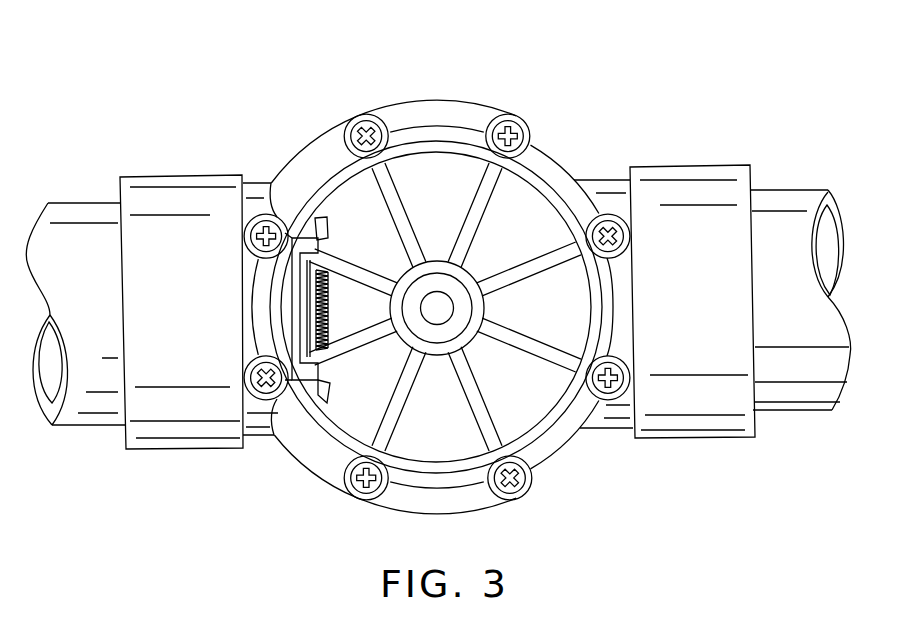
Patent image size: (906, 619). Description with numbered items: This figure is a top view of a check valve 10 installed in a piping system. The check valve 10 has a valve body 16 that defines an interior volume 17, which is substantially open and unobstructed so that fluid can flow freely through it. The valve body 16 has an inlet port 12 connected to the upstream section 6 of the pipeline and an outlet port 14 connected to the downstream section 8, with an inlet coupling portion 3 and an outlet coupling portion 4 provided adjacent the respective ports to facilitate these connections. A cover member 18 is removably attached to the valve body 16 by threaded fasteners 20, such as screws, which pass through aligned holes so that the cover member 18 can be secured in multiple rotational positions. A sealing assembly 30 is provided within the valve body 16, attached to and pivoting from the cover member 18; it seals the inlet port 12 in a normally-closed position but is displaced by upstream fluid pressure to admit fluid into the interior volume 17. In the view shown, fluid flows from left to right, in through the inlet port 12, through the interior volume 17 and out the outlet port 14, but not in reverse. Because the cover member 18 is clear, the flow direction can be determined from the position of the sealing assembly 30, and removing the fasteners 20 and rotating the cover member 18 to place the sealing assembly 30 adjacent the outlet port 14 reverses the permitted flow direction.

The check valve 10 is at (199, 97).
The inlet coupling portion 3 is at (181, 178).
The outlet coupling portion 4 is at (683, 177).
The upstream section 6 is at (78, 210).
The downstream section 8 is at (777, 197).
The inlet port 12 is at (252, 307).
The outlet port 14 is at (600, 302).
The valve body 16 is at (431, 104).
The interior volume 17 is at (348, 208).
The cover member 18 is at (518, 212).
The threaded fasteners 20 is at (362, 135).
The sealing assembly 30 is at (305, 317).